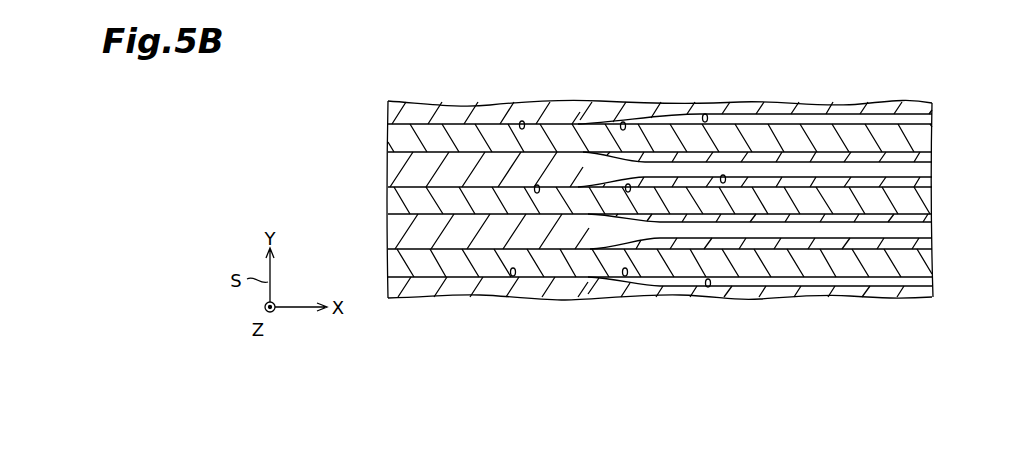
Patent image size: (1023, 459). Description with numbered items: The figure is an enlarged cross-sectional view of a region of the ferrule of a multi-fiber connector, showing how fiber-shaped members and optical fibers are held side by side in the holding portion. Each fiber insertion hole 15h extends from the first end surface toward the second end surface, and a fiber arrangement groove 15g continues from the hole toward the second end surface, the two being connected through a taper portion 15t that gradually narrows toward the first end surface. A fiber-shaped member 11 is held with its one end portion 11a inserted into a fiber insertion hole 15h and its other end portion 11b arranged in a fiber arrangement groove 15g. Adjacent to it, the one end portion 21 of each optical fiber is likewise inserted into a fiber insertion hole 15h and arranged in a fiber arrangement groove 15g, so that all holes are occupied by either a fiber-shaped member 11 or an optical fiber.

The fiber-shaped member 11 is at (918, 136).
The one end portion 11a is at (451, 128).
The other end portion 11b is at (815, 138).
The fiber insertion hole 15h is at (537, 185).
The taper portion 15t is at (628, 184).
The fiber arrangement groove 15g is at (723, 175).
The one end portion 21 is at (915, 199).